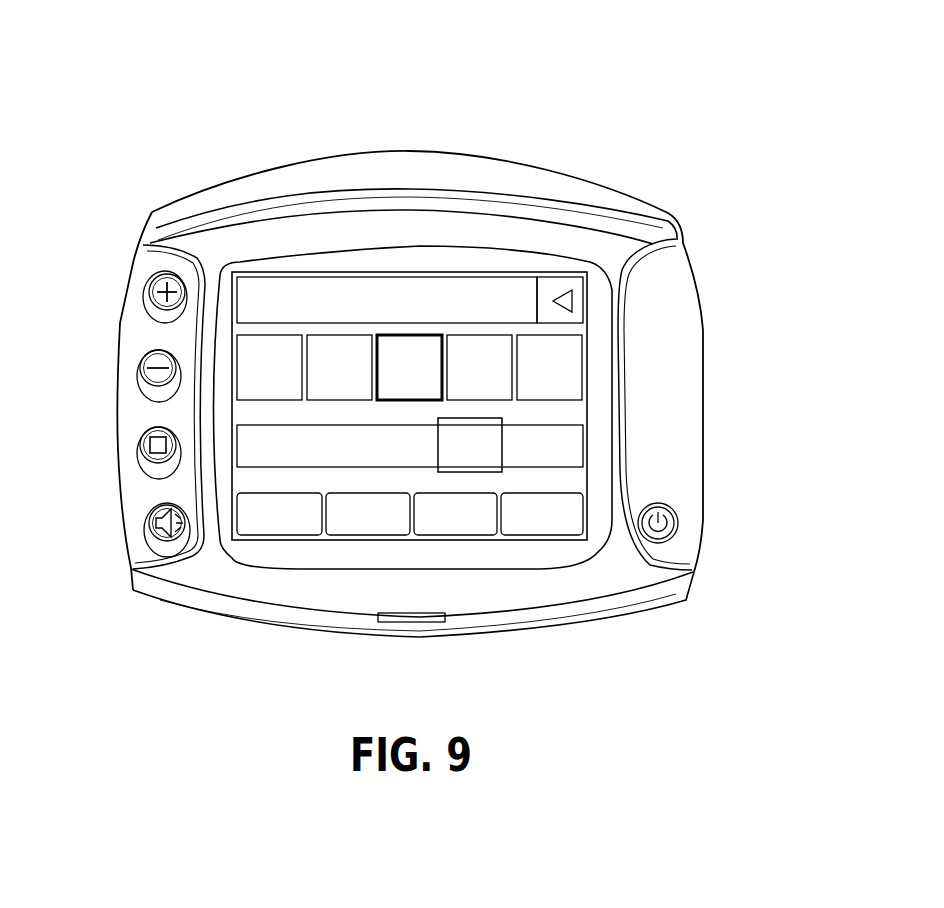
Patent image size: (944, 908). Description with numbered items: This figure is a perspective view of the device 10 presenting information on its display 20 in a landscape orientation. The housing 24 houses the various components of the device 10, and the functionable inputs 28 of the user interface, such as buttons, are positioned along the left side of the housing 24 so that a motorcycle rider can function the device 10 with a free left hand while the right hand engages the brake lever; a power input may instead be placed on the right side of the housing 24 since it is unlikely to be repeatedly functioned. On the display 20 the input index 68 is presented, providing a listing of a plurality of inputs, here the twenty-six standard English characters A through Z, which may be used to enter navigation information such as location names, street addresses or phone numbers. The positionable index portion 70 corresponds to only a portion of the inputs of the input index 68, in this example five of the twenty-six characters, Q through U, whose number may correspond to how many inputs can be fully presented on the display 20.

The device 10 is at (196, 150).
The display 20 is at (496, 359).
The housing 24 is at (617, 253).
The functionable inputs 28 is at (152, 292).
The input index 68 is at (573, 430).
The positionable index portion 70 is at (490, 458).